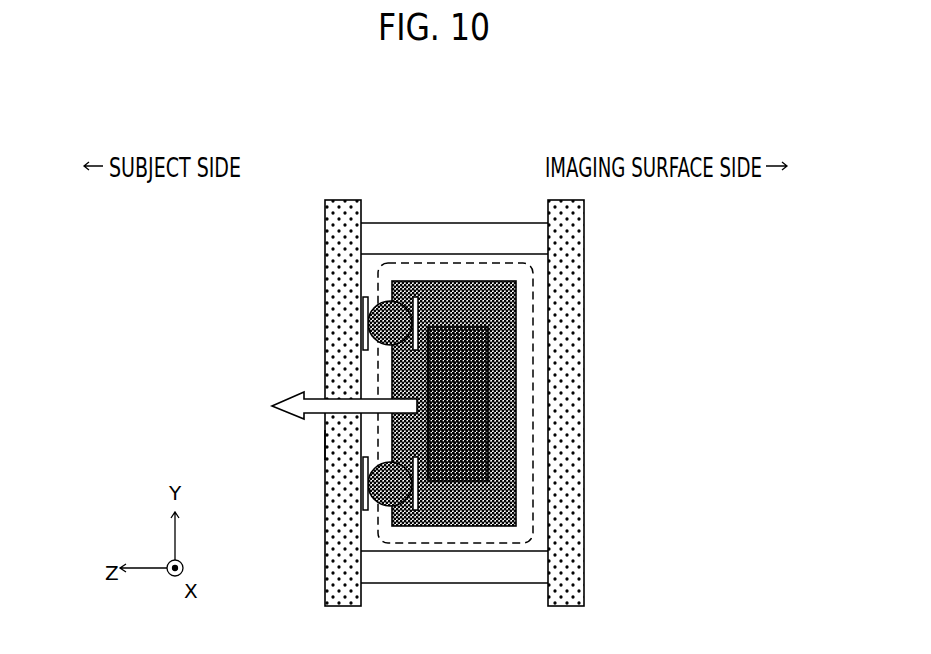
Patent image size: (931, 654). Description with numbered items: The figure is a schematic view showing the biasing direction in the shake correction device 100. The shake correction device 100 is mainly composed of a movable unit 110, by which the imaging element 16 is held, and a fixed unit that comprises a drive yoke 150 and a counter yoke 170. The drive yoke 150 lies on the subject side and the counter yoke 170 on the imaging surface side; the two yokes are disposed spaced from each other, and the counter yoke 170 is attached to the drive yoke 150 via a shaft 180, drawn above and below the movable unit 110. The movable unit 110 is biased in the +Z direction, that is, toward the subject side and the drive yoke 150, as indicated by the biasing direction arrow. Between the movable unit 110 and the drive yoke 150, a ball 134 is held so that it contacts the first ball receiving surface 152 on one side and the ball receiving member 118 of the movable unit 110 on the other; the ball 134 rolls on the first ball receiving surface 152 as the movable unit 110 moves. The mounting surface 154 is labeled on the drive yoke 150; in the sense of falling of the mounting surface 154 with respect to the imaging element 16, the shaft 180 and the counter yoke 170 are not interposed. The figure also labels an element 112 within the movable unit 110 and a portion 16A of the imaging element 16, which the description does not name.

The shake correction device 100 is at (554, 142).
The movable unit 110 is at (533, 338).
The substrate 112 is at (502, 477).
The ball receiving member 118 is at (417, 303).
The ball 134 is at (388, 308).
The drive yoke 150 is at (333, 223).
The first ball receiving surface 152 is at (363, 495).
The mounting surface 154 is at (324, 445).
The imaging element 16 is at (481, 400).
The sensor substrate surface 16A is at (427, 380).
The counter yoke 170 is at (577, 222).
The shaft 180 is at (477, 226).